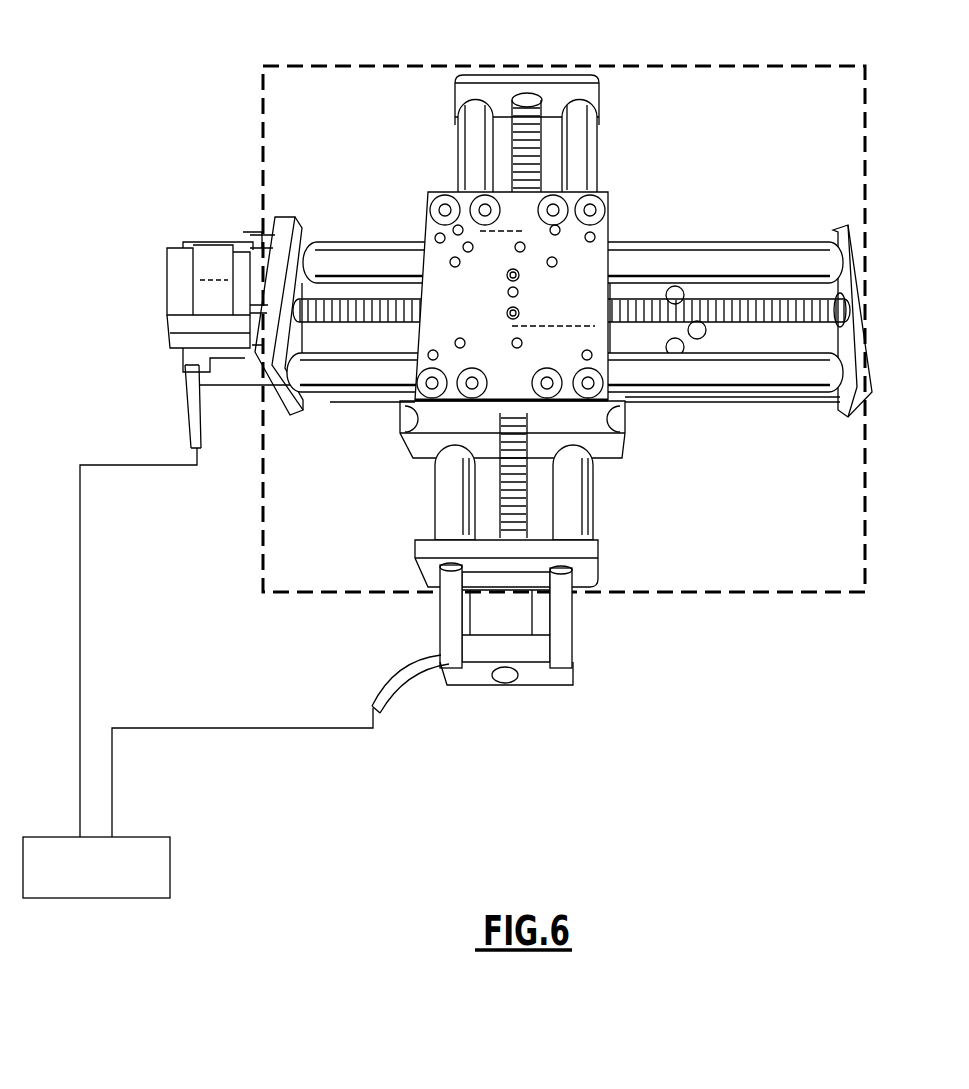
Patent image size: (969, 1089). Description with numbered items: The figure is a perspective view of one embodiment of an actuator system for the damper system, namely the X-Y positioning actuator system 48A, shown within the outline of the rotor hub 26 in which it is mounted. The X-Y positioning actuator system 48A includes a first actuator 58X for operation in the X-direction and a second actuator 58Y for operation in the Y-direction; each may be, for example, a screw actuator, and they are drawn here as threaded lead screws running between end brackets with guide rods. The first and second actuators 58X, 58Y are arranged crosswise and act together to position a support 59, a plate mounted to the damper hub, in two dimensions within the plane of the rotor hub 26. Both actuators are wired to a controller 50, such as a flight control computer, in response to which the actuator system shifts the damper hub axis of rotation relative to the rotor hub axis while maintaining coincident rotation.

The rotor hub 26 is at (360, 66).
The X-Y positioning actuator system 48A is at (746, 112).
The first actuator 58X is at (786, 260).
The second actuator 58Y is at (583, 515).
The support 59 is at (582, 273).
The controller 50 is at (101, 898).